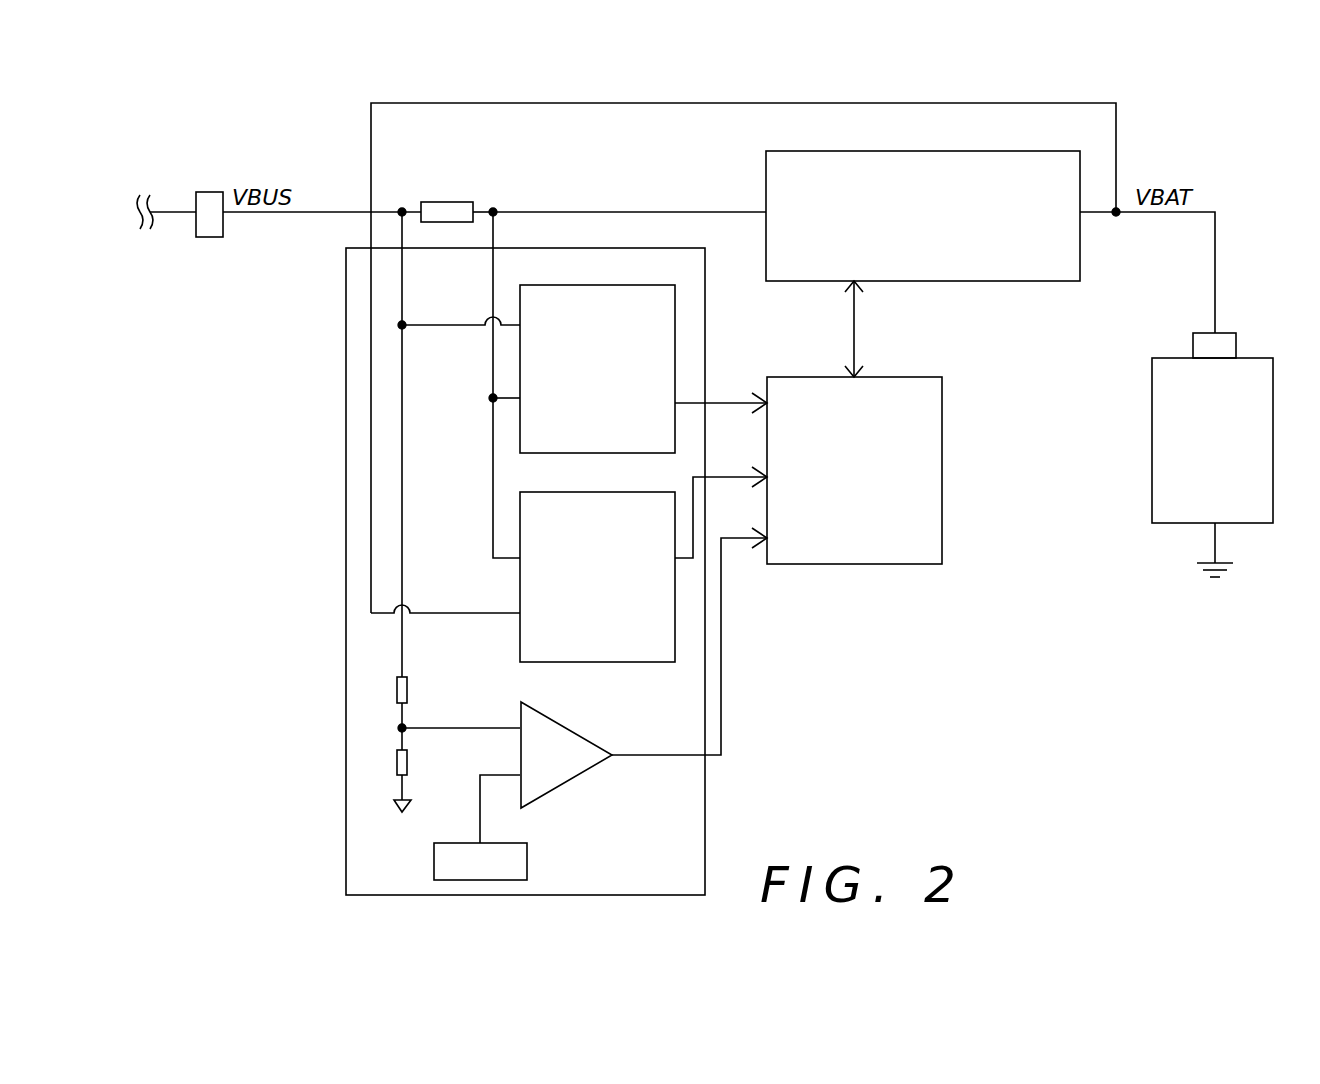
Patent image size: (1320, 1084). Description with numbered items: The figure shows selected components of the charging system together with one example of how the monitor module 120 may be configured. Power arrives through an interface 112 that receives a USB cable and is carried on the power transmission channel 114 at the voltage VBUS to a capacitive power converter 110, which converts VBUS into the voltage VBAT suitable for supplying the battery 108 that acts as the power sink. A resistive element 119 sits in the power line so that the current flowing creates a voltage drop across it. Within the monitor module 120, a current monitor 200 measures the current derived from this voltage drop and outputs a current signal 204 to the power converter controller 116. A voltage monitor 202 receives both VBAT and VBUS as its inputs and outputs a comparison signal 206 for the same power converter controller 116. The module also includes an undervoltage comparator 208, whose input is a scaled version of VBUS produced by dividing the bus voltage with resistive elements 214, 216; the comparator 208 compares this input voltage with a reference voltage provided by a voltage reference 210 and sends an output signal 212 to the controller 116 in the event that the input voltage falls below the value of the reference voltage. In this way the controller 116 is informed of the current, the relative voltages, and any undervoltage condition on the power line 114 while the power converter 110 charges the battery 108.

The battery 108 is at (1152, 454).
The capacitive power converter 110 is at (838, 149).
The interface 112 is at (210, 237).
The power transmission channel 114 is at (610, 212).
The power converter controller 116 is at (942, 468).
The resistive element 119 is at (446, 202).
The monitor module 120 is at (346, 548).
The current monitor 200 is at (603, 284).
The voltage monitor 202 is at (603, 491).
The current signal 204 is at (730, 400).
The comparison signal 206 is at (730, 474).
The undervoltage comparator 208 is at (552, 718).
The voltage reference 210 is at (527, 862).
The output signal 212 is at (721, 657).
The resistive element 214 is at (397, 686).
The resistive element 216 is at (397, 758).